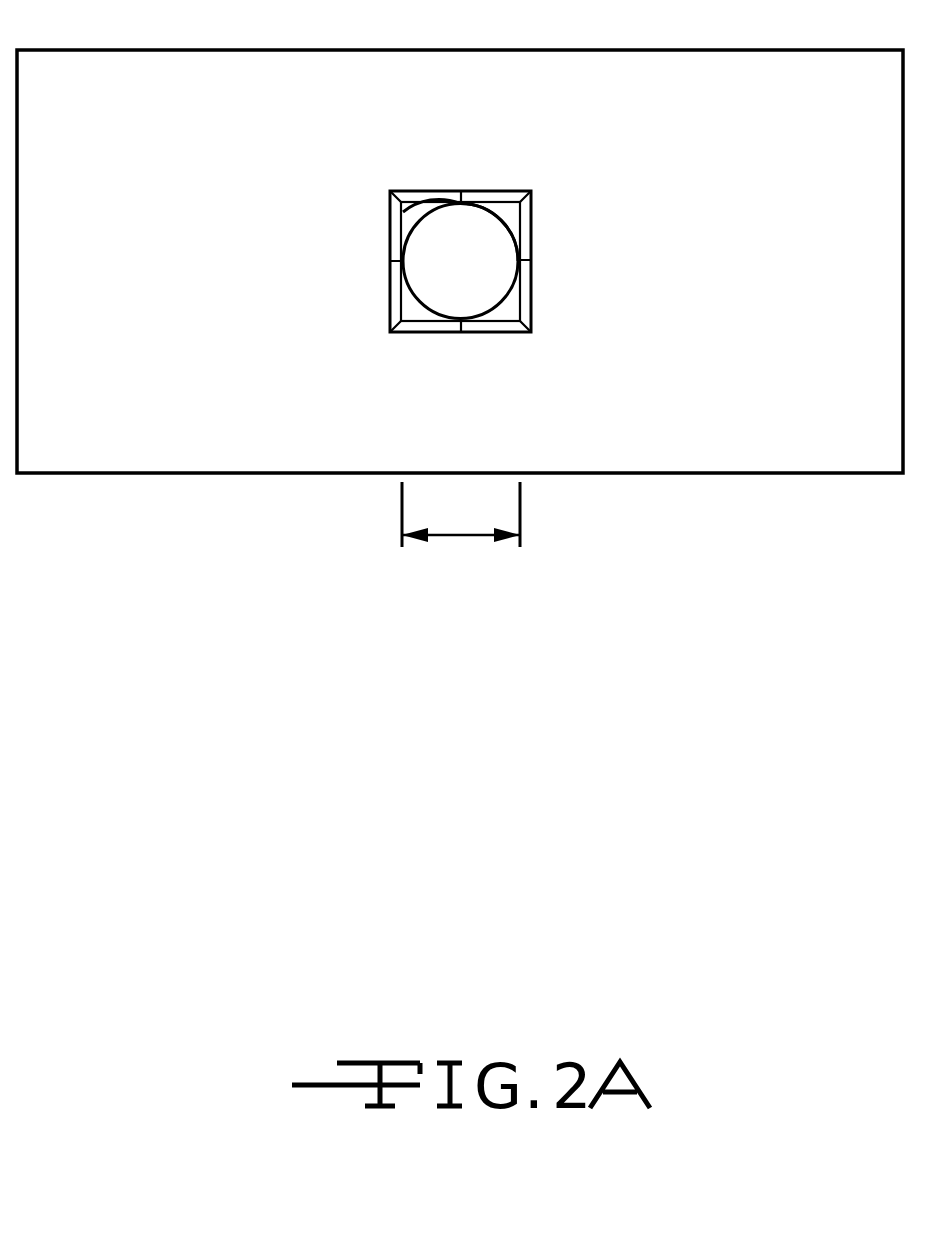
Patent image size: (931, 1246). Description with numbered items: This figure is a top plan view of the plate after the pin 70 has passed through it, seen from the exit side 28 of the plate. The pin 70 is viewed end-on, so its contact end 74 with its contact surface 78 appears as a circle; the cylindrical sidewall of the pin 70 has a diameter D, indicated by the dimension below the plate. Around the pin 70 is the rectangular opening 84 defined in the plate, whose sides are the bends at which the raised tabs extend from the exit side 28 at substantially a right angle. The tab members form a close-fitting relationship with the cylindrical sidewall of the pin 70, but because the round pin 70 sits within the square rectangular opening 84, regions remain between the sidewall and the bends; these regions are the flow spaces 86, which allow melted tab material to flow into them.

The exit side 28 is at (131, 80).
The pin 70 is at (489, 236).
The contact end 74 is at (438, 246).
The contact surface 78 is at (483, 267).
The rectangular opening 84 is at (391, 288).
The flow spaces 86 is at (392, 235).
The diameter D is at (443, 535).